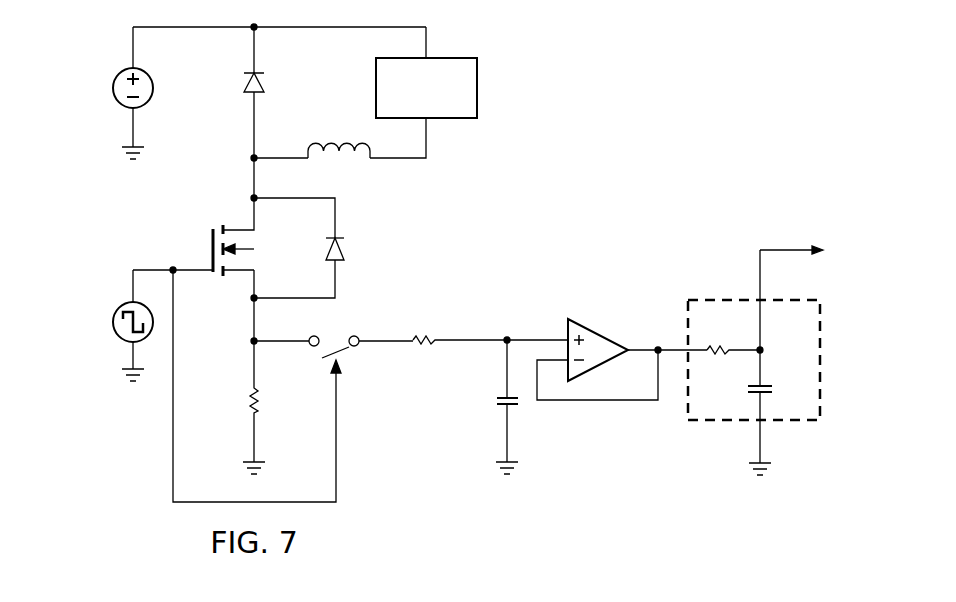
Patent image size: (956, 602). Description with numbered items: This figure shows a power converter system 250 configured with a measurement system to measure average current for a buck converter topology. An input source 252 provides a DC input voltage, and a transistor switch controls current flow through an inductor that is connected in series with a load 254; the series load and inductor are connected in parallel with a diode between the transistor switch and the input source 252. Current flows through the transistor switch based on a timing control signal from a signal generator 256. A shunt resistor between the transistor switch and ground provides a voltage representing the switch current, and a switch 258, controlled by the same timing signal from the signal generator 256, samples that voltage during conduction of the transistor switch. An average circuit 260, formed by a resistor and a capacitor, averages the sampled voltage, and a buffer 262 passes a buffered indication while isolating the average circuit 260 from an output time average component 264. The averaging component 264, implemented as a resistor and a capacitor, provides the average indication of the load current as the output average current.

The power converter system 250 is at (454, 263).
The input source 252 is at (113, 88).
The load 254 is at (376, 88).
The signal generator 256 is at (113, 318).
The switch 258 is at (347, 347).
The average circuit 260 is at (505, 298).
The buffer 262 is at (598, 334).
The output time average component 264 is at (794, 428).